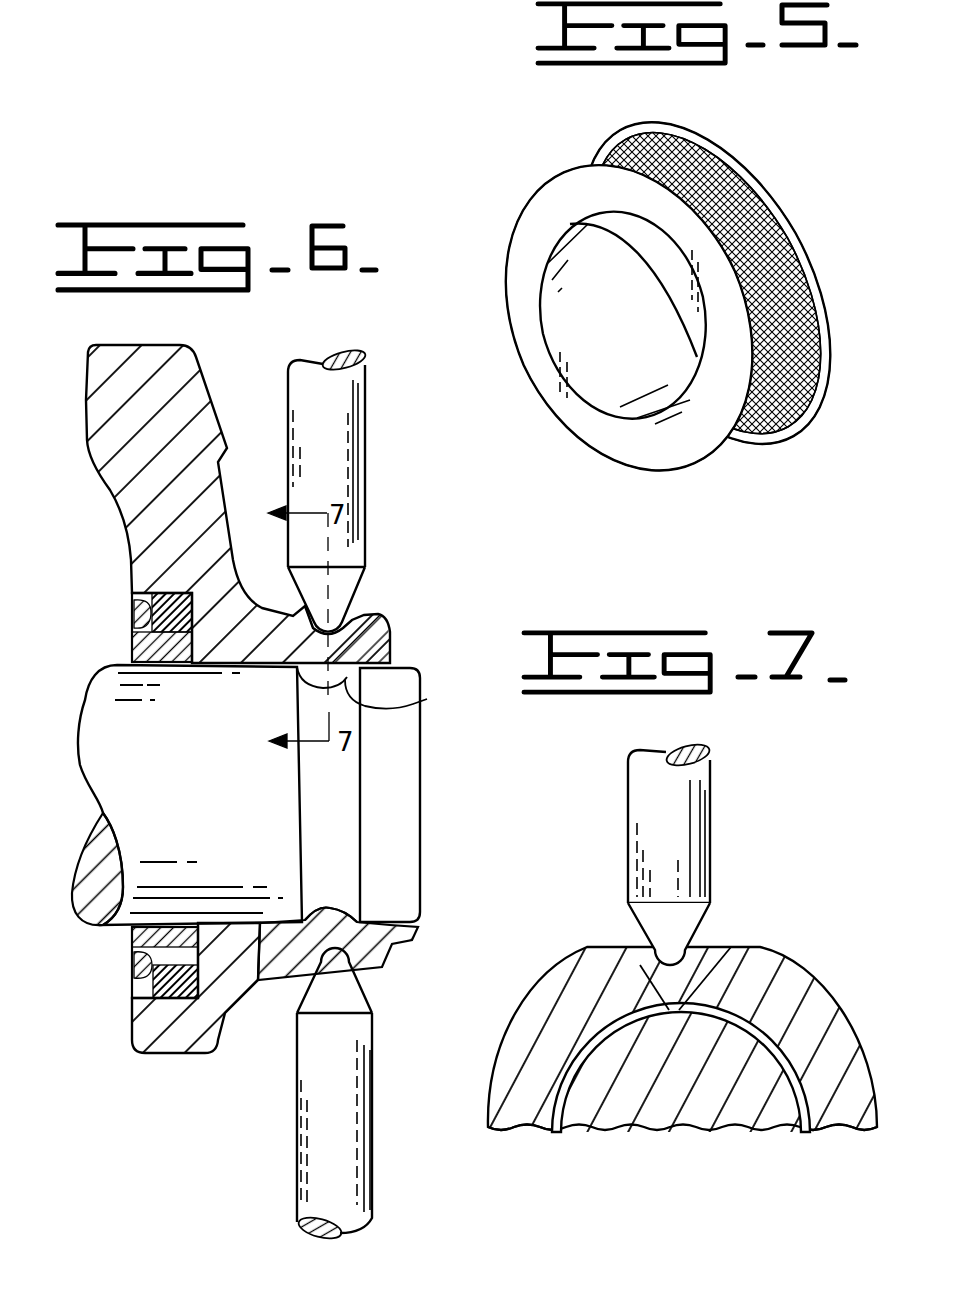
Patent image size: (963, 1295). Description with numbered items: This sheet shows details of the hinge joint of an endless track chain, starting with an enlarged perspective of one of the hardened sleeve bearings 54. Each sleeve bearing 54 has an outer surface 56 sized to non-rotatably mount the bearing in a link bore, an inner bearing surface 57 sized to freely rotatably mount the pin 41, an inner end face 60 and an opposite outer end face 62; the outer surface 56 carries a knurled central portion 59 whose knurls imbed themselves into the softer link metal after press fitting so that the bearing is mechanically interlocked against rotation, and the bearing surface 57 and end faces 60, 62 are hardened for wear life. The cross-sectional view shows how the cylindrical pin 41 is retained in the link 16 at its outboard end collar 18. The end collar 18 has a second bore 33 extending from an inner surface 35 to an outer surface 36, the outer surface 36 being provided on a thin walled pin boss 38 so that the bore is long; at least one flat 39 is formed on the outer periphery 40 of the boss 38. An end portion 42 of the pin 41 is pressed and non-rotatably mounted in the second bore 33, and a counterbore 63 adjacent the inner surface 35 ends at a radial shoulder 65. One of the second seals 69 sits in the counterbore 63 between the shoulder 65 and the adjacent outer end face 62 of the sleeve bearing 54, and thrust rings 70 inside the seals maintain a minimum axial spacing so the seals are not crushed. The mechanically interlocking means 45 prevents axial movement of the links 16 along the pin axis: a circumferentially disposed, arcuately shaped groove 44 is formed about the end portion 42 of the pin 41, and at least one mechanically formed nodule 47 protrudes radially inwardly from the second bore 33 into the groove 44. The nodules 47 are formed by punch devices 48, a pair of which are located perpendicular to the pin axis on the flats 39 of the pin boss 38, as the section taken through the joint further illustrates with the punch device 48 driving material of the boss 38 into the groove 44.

In FIG. 5, the sleeve bearing 54 is at (784, 196).
In FIG. 5, the outer surface 56 is at (604, 135).
In FIG. 5, the inner bearing surface 57 is at (595, 360).
In FIG. 5, the knurled central portion 59 is at (790, 270).
In FIG. 5, the inner end face 60 is at (648, 290).
In FIG. 5, the outer end face 62 is at (661, 453).
In FIG. 6, the link 16 is at (87, 413).
In FIG. 6, the outboard end collar 18 is at (175, 1043).
In FIG. 6, the second bore 33 is at (290, 916).
In FIG. 6, the inner surface 35 is at (132, 1010).
In FIG. 6, the outer surface 36 is at (392, 945).
In FIG. 6, the pin boss 38 is at (374, 958).
In FIG. 7, the pin boss 38 is at (525, 1013).
In FIG. 6, the flat 39 is at (354, 620).
In FIG. 7, the flat 39 is at (753, 947).
In FIG. 7, the outer periphery 40 is at (817, 983).
In FIG. 6, the pin 41 is at (93, 757).
In FIG. 6, the end portion 42 is at (240, 810).
In FIG. 6, the groove 44 is at (338, 839).
In FIG. 6, the mechanically interlocking means 45 is at (362, 638).
In FIG. 7, the mechanically interlocking means 45 is at (704, 960).
In FIG. 6, the nodule 47 is at (427, 699).
In FIG. 7, the nodule 47 is at (670, 1013).
In FIG. 6, the punch device 48 is at (352, 387).
In FIG. 7, the punch device 48 is at (700, 784).
In FIG. 6, the counterbore 63 is at (132, 607).
In FIG. 6, the radial shoulder 65 is at (177, 667).
In FIG. 6, the second seal 69 is at (131, 618).
In FIG. 6, the thrust ring 70 is at (112, 653).